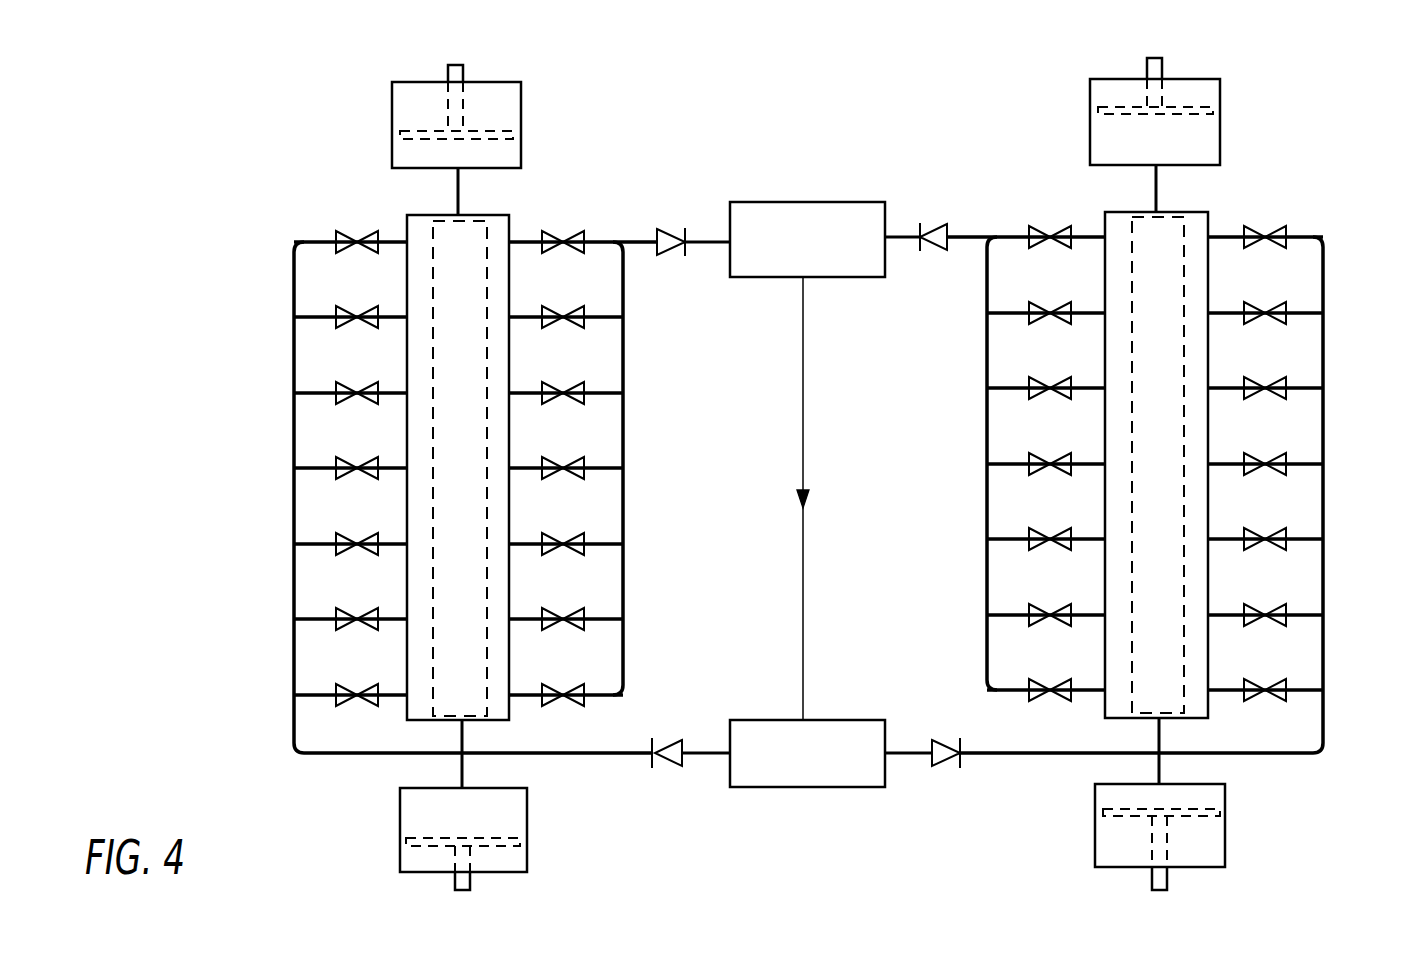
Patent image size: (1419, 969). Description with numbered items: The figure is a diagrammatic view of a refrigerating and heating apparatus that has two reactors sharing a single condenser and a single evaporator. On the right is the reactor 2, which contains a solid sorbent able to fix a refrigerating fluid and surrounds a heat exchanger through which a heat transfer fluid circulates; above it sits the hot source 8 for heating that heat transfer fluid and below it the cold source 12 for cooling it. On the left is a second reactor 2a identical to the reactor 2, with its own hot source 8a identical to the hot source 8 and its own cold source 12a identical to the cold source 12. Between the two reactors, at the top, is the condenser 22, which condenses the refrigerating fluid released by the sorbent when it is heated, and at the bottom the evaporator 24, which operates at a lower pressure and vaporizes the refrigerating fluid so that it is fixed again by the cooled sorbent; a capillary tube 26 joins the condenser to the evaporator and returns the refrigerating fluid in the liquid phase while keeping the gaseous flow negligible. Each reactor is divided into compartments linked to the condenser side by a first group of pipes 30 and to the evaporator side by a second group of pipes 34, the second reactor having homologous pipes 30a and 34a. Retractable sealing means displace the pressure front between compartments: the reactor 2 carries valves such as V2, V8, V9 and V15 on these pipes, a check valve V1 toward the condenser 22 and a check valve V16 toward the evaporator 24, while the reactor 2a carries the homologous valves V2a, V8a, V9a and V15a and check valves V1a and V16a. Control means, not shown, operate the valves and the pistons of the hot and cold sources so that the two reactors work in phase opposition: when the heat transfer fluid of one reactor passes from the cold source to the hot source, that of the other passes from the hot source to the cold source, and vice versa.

The reactor 2 is at (1222, 208).
The second reactor 2a is at (392, 210).
The hot source 8 is at (1220, 93).
The hot source 8a is at (392, 108).
The cold source 12 is at (1225, 832).
The cold source 12a is at (400, 836).
The condenser 22 is at (803, 215).
The evaporator 24 is at (790, 770).
The capillary tube 26 is at (803, 452).
The first group of pipes 30 is at (1000, 250).
The first group of pipes 30a is at (598, 244).
The second group of pipes 34 is at (1305, 318).
The second group of pipes 34a is at (313, 320).
The check valve V1 is at (938, 242).
The check valve V1a is at (664, 244).
The valve V2 is at (1045, 690).
The valve V2a is at (346, 693).
The valve V8 is at (1062, 240).
The valve V8a is at (340, 248).
The valve V9 is at (1272, 690).
The valve V9a is at (572, 693).
The valve V15 is at (1283, 248).
The valve V15a is at (576, 242).
The check valve V16 is at (950, 765).
The check valve V16a is at (672, 764).